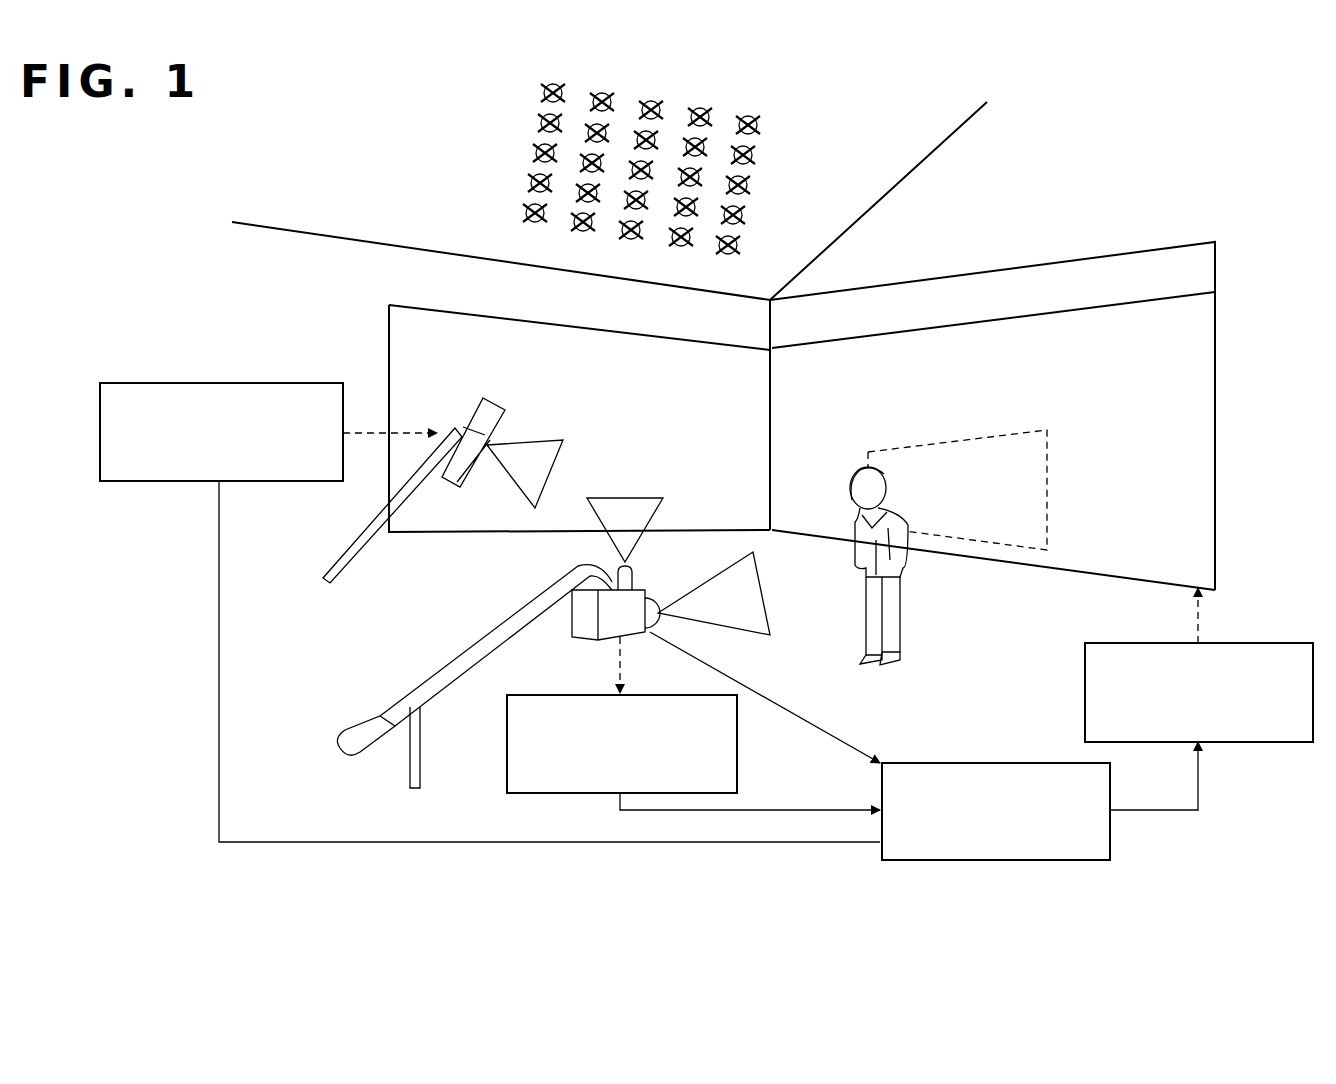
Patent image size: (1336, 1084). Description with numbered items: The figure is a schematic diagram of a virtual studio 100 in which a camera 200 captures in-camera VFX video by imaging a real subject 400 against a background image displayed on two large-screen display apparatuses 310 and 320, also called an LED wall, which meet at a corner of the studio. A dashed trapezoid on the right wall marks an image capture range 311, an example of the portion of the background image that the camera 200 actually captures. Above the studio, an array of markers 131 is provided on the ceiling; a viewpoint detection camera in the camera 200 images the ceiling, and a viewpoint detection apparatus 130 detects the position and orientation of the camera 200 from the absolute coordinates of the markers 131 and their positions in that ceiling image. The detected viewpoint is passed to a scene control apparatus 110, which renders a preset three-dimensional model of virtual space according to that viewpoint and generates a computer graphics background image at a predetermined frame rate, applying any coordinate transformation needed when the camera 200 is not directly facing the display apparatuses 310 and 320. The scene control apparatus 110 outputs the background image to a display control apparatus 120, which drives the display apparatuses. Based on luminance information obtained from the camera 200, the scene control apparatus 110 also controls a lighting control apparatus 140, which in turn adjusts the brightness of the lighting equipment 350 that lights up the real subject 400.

The virtual studio 100 is at (675, 852).
The scene control apparatus 110 is at (938, 763).
The display control apparatus 120 is at (1083, 684).
The viewpoint detection apparatus 130 is at (505, 773).
The markers 131 is at (758, 170).
The lighting control apparatus 140 is at (120, 383).
The camera 200 is at (680, 578).
The display apparatus 310 is at (893, 332).
The image capture range 311 is at (1048, 452).
The display apparatus 320 is at (525, 316).
The lighting equipment 350 is at (480, 404).
The real subject 400 is at (903, 588).